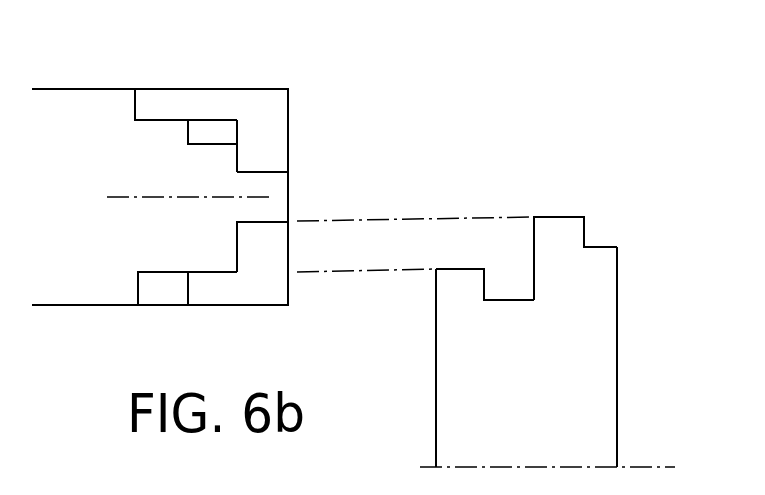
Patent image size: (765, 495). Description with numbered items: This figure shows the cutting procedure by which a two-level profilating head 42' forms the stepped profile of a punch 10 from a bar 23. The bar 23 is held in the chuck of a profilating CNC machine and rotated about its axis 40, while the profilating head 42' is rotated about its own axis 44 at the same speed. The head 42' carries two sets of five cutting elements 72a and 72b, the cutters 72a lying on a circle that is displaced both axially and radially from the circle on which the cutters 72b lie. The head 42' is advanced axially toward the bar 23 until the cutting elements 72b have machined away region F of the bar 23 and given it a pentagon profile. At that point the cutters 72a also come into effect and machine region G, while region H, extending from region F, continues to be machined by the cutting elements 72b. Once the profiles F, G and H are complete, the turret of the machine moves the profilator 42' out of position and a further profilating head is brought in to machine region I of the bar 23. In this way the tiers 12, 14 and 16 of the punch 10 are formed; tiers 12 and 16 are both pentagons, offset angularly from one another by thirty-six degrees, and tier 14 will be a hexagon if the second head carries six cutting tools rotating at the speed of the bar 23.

The punch 10 is at (89, 80).
The tier 16 is at (157, 119).
The region I is at (206, 128).
The tier 14 is at (218, 143).
The tier 12 is at (263, 168).
The bar stock 23 is at (108, 257).
The axis 40 is at (214, 198).
The region G is at (270, 246).
The region H is at (162, 293).
The region F is at (260, 293).
The cutting elements 72b is at (459, 268).
The cutting elements 72a is at (560, 217).
The profilating head 42' is at (558, 357).
The axis 44 is at (665, 465).